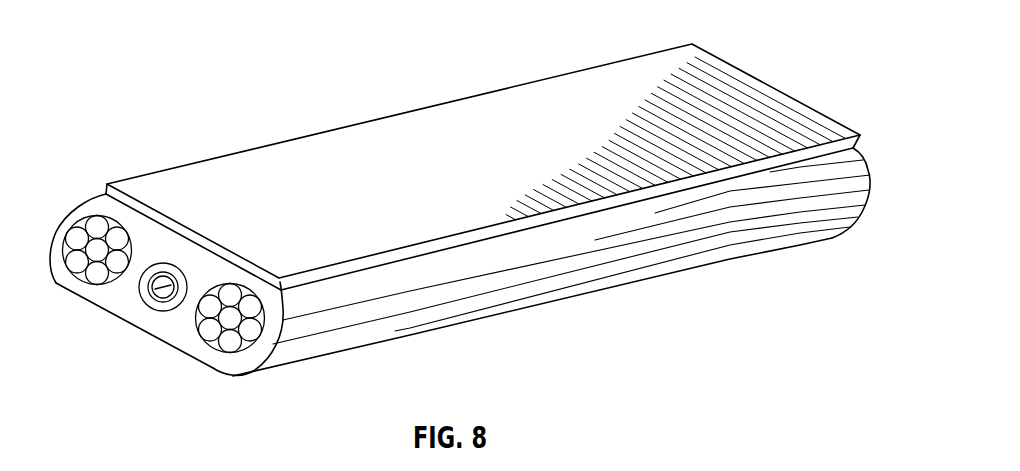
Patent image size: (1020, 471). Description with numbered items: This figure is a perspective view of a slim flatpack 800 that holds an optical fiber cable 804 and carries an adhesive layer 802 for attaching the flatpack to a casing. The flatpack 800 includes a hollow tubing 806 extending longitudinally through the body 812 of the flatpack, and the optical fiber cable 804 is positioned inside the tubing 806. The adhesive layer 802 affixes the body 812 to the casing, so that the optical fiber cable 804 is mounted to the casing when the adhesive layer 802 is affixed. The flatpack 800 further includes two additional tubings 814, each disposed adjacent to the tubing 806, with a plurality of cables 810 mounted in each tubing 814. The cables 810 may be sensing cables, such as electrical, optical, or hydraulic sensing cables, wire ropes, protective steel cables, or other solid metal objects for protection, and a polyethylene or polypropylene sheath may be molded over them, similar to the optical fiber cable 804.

The slim flatpack 800 is at (858, 240).
The adhesive layer 802 is at (401, 134).
The optical fiber cable 804 is at (150, 292).
The hollow tubing 806 is at (174, 266).
The cables 810 is at (95, 278).
The body 812 is at (543, 297).
The additional tubing 814 is at (85, 212).